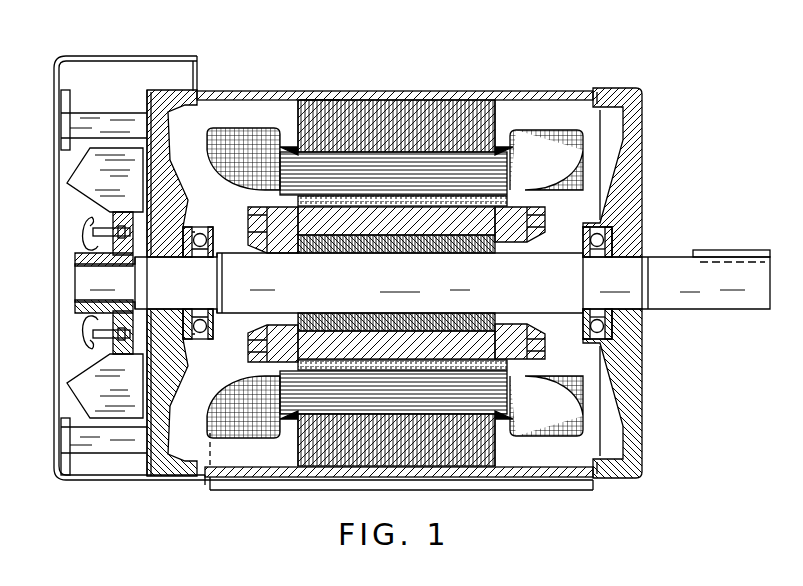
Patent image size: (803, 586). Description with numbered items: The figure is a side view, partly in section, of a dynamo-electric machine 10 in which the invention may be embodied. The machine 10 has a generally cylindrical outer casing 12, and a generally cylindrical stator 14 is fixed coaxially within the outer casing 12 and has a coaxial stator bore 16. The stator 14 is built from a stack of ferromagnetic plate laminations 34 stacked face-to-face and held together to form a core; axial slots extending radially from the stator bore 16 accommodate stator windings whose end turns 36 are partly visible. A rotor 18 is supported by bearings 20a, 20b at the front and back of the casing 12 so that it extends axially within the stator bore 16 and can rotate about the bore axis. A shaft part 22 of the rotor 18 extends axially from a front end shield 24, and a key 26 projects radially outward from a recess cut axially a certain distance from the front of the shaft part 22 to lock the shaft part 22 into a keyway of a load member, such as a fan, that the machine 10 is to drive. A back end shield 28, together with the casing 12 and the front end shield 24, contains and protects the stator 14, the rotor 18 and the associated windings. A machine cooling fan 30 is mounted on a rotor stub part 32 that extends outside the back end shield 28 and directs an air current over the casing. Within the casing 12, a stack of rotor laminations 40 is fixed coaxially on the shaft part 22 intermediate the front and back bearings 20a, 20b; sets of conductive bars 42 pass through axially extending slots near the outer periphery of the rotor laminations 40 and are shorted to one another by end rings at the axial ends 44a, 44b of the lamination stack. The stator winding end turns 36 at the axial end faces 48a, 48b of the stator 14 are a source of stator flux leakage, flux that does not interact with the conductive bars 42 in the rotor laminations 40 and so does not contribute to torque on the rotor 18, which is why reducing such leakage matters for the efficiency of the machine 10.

The dynamo-electric machine 10 is at (330, 52).
The outer casing 12 is at (432, 91).
The stator 14 is at (500, 110).
The stator bore 16 is at (415, 209).
The rotor 18 is at (552, 224).
The front bearing 20a is at (592, 247).
The back bearing 20b is at (195, 250).
The shaft part 22 is at (665, 256).
The front end shield 24 is at (642, 127).
The key 26 is at (727, 250).
The back end shield 28 is at (143, 90).
The machine cooling fan 30 is at (67, 183).
The rotor stub part 32 is at (72, 283).
The plate laminations 34 is at (336, 96).
The stator winding end turns 36 is at (562, 172).
The rotor laminations 40 is at (384, 254).
The conductive bars 42 is at (303, 236).
The axial end of rotor laminations 44a is at (497, 250).
The axial end of rotor laminations 44b is at (296, 255).
The axial end face of stator 48a is at (497, 120).
The axial end face of stator 48b is at (296, 122).